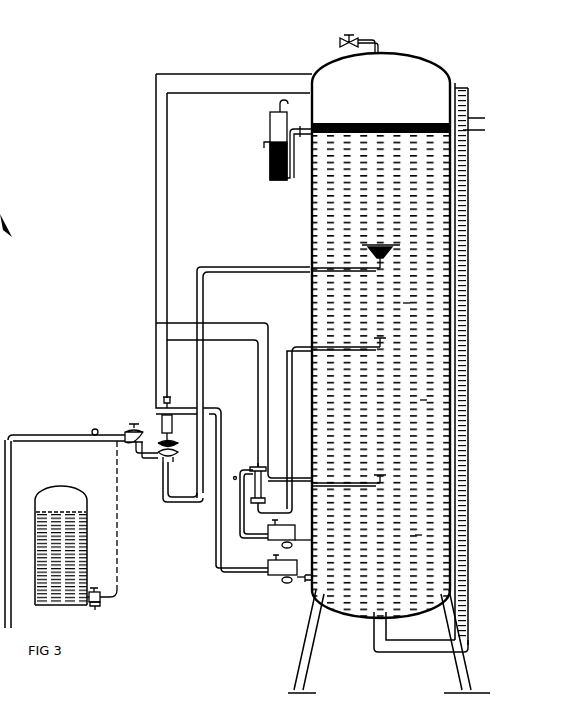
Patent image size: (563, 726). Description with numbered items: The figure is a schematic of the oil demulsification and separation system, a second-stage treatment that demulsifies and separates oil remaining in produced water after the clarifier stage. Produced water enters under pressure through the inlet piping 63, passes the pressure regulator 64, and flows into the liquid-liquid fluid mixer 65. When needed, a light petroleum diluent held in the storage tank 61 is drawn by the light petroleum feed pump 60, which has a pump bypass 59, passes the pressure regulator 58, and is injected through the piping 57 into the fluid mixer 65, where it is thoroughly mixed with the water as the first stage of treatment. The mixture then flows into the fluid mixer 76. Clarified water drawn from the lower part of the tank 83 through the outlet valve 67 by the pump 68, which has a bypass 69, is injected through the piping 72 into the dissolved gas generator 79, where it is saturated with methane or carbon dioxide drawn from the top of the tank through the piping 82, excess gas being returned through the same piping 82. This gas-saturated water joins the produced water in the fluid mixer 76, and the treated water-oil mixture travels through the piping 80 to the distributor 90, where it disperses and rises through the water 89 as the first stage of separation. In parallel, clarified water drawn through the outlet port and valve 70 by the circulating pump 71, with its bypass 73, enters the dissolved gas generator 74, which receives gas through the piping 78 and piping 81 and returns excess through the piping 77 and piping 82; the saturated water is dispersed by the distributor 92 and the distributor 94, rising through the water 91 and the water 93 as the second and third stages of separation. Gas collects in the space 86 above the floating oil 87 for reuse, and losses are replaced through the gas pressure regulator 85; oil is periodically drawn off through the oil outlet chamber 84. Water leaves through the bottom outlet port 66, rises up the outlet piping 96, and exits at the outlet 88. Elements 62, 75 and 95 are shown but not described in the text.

The piping 57 is at (118, 522).
The pressure regulator 58 is at (119, 588).
The pump bypass 59 is at (96, 590).
The light petroleum feed pump 60 is at (94, 608).
The storage tank 61 is at (36, 565).
The reservoir tank 62 is at (42, 490).
The inlet piping 63 is at (70, 434).
The pressure regulator 64 is at (95, 428).
The liquid-liquid fluid mixer 65 is at (132, 430).
The bottom outlet port 66 is at (372, 632).
The outlet valve 67 is at (305, 583).
The pump 68 is at (281, 580).
The bypass 69 is at (268, 563).
The outlet port and valve 70 is at (289, 547).
The circulating pump 71 is at (268, 544).
The piping 72 is at (213, 510).
The bypass 73 is at (268, 527).
The dissolved gas generator 74 is at (262, 480).
The line 75 is at (272, 445).
The fluid mixer 76 is at (172, 460).
The piping 77 is at (256, 442).
The piping 78 is at (265, 446).
The dissolved gas generator 79 is at (162, 397).
The piping 80 is at (204, 362).
The piping 81 is at (156, 288).
The piping 82 is at (164, 212).
The tank 83 is at (310, 199).
The oil outlet chamber 84 is at (268, 168).
The gas pressure regulator 85 is at (338, 40).
The space 86 is at (412, 78).
The floating oil 87 is at (412, 125).
The outlet 88 is at (478, 135).
The water 89 is at (441, 205).
The distributor 90 is at (392, 253).
The water 91 is at (403, 303).
The distributor 92 is at (388, 342).
The water 93 is at (420, 400).
The distributor 94 is at (388, 486).
The packing layer 95 is at (415, 535).
The outlet piping 96 is at (470, 560).